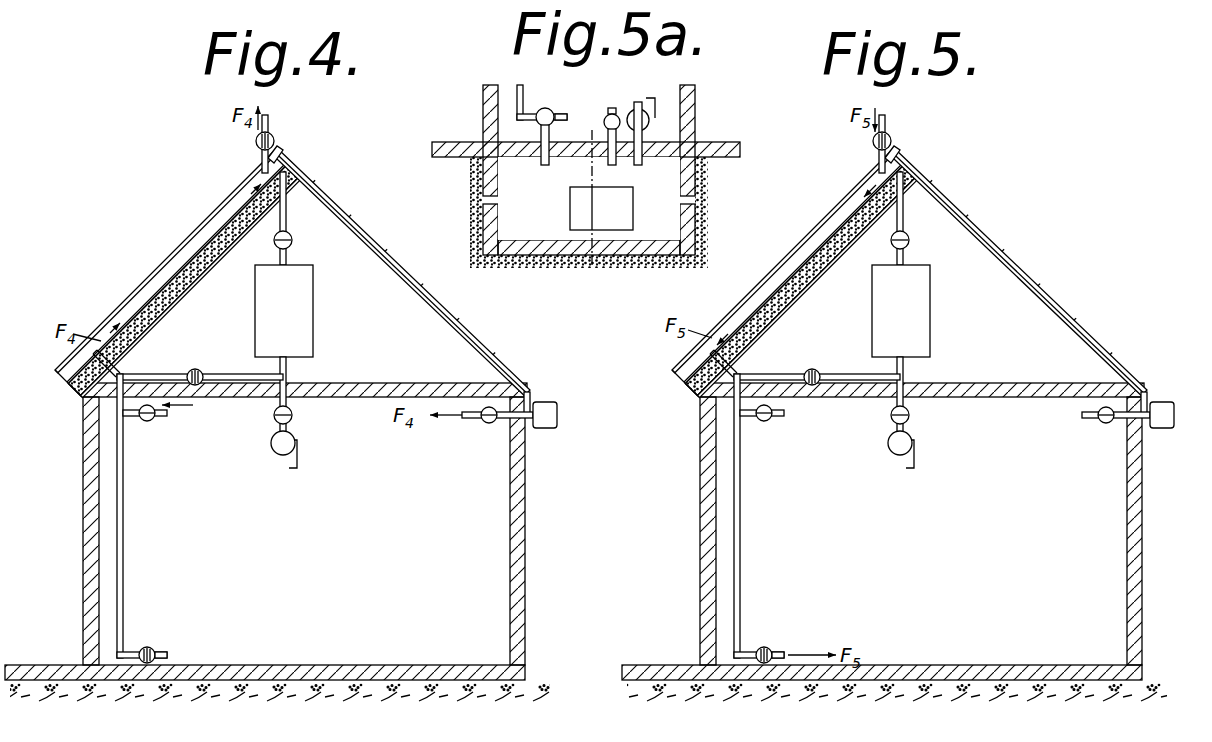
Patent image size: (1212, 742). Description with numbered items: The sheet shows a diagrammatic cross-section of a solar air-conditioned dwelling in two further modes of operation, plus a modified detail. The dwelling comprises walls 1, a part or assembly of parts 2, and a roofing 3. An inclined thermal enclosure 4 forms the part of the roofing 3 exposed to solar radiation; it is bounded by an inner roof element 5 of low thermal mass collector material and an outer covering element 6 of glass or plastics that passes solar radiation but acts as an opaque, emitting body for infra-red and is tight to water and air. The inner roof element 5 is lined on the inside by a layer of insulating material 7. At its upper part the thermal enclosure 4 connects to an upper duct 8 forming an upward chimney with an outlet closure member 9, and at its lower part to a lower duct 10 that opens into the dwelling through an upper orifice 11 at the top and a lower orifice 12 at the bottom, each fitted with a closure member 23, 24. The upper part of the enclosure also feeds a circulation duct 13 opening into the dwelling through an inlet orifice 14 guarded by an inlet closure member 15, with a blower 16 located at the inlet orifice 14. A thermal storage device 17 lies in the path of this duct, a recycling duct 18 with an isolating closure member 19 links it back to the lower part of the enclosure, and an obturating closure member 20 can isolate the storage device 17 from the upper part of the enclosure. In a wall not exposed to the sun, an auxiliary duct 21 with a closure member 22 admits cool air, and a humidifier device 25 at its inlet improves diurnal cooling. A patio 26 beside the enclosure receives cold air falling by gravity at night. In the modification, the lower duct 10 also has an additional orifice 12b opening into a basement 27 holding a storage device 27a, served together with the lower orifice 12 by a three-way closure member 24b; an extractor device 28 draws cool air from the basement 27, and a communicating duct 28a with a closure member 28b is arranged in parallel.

In FIG. 4, the walls 1 is at (83, 557).
In FIG. 5, the walls 1 is at (700, 557).
In FIG. 4, the part or assembly of parts 2 is at (318, 592).
In FIG. 5, the part or assembly of parts 2 is at (935, 592).
In FIG. 4, the roofing 3 is at (352, 203).
In FIG. 5, the roofing 3 is at (969, 203).
In FIG. 4, the thermal enclosure 4 is at (238, 207).
In FIG. 5, the thermal enclosure 4 is at (855, 207).
In FIG. 4, the inner roof element 5 is at (213, 246).
In FIG. 5, the inner roof element 5 is at (830, 246).
In FIG. 4, the outer covering element 6 is at (158, 272).
In FIG. 5, the outer covering element 6 is at (775, 272).
In FIG. 4, the layer of insulating material 7 is at (130, 330).
In FIG. 5, the layer of insulating material 7 is at (747, 330).
In FIG. 4, the upper duct 8 is at (262, 163).
In FIG. 5, the upper duct 8 is at (879, 163).
In FIG. 4, the outlet closure member 9 is at (273, 138).
In FIG. 5, the outlet closure member 9 is at (890, 138).
In FIG. 4, the lower duct 10 is at (117, 403).
In FIG. 5, the lower duct 10 is at (734, 403).
In FIG. 5A, the lower duct 10 is at (517, 96).
In FIG. 4, the upper orifice 11 is at (165, 413).
In FIG. 5, the upper orifice 11 is at (782, 413).
In FIG. 4, the lower orifice 12 is at (170, 655).
In FIG. 5, the lower orifice 12 is at (787, 655).
In FIG. 5A, the lower orifice 12 is at (567, 117).
In FIG. 4, the circulation duct 13 is at (286, 366).
In FIG. 5, the circulation duct 13 is at (903, 366).
In FIG. 4, the inlet orifice 14 is at (296, 470).
In FIG. 5, the inlet orifice 14 is at (913, 470).
In FIG. 4, the inlet closure member 15 is at (292, 416).
In FIG. 5, the inlet closure member 15 is at (909, 416).
In FIG. 4, the blower 16 is at (272, 449).
In FIG. 5, the blower 16 is at (889, 449).
In FIG. 4, the thermal storage device 17 is at (313, 298).
In FIG. 5, the thermal storage device 17 is at (930, 298).
In FIG. 4, the recycling duct 18 is at (238, 373).
In FIG. 5, the recycling duct 18 is at (855, 373).
In FIG. 4, the isolating closure member 19 is at (190, 370).
In FIG. 5, the isolating closure member 19 is at (807, 370).
In FIG. 4, the obturating closure member 20 is at (292, 239).
In FIG. 5, the obturating closure member 20 is at (909, 239).
In FIG. 4, the auxiliary duct 21 is at (527, 392).
In FIG. 5, the auxiliary duct 21 is at (1144, 392).
In FIG. 4, the closure member 22 is at (483, 421).
In FIG. 5, the closure member 22 is at (1100, 421).
In FIG. 4, the closure member 23 is at (148, 421).
In FIG. 5, the closure member 23 is at (765, 421).
In FIG. 4, the closure member 24 is at (150, 647).
In FIG. 5, the closure member 24 is at (767, 647).
In FIG. 4, the humidifier device 25 is at (545, 428).
In FIG. 5, the humidifier device 25 is at (1162, 428).
In FIG. 4, the patio 26 is at (55, 654).
In FIG. 5, the patio 26 is at (672, 654).
In FIG. 5A, the basement 27 is at (613, 233).
In FIG. 5A, the storage device 27a is at (618, 213).
In FIG. 5A, the extractor device 28 is at (637, 104).
In FIG. 5A, the communicating duct 28a is at (618, 157).
In FIG. 5A, the closure member 28b is at (612, 108).
In FIG. 5A, the three-way closure member 24b is at (553, 100).
In FIG. 5A, the additional orifice 12b is at (545, 165).